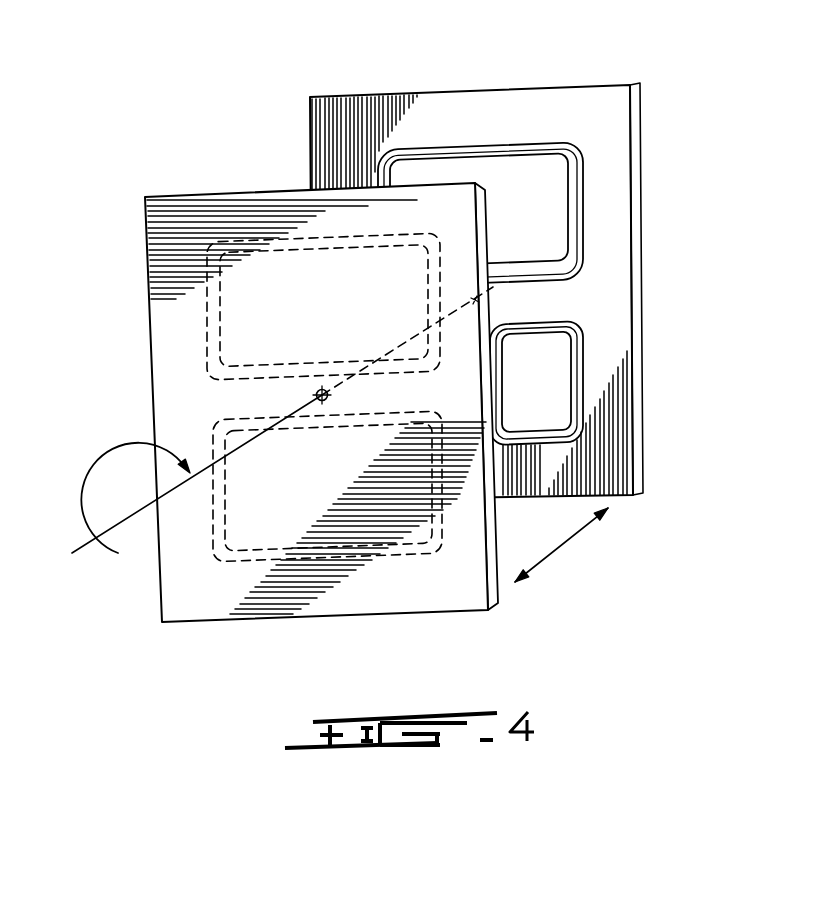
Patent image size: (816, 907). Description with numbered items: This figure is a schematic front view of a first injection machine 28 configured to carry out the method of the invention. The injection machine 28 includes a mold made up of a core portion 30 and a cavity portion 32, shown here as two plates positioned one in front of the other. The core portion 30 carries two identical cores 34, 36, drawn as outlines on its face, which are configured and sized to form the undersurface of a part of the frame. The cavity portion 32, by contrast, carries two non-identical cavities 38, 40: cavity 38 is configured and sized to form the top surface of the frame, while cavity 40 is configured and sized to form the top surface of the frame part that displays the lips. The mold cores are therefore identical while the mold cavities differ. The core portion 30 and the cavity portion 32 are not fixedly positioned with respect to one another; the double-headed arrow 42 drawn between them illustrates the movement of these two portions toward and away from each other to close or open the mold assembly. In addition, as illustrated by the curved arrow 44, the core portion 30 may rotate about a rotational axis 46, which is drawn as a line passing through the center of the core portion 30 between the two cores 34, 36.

The injection machine 28 is at (228, 117).
The core portion 30 is at (145, 247).
The cavity portion 32 is at (640, 117).
The core 34 is at (253, 307).
The core 36 is at (287, 513).
The cavity 38 is at (543, 208).
The cavity 40 is at (553, 368).
The arrow 42 is at (560, 547).
The arrow 44 is at (91, 470).
The rotational axis 46 is at (318, 388).